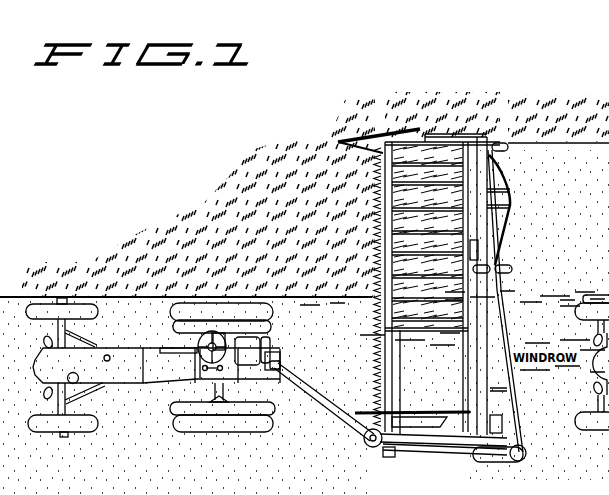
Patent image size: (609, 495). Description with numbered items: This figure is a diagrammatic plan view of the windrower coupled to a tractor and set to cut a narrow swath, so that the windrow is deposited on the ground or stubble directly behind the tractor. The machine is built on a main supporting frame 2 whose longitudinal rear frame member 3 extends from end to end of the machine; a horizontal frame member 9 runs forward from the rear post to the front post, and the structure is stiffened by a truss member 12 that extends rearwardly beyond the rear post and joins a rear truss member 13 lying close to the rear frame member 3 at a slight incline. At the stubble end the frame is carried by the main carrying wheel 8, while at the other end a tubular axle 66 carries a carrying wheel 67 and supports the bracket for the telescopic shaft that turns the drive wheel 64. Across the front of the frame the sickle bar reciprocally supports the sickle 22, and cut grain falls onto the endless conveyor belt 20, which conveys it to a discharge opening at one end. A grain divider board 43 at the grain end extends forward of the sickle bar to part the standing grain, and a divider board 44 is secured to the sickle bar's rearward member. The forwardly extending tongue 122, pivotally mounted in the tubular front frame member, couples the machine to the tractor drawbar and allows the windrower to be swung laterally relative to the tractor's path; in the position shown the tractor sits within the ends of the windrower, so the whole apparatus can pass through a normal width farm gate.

The main supporting frame 2 is at (517, 421).
The longitudinal rear frame member 3 is at (487, 228).
The main carrying wheel 8 is at (495, 457).
The horizontal frame member 9 is at (425, 438).
The truss member 12 is at (445, 455).
The rear truss member 13 is at (500, 297).
The endless conveyor belt 20 is at (457, 181).
The sickle 22 is at (377, 174).
The grain divider board 43 is at (341, 140).
The divider board 44 is at (415, 412).
The drive wheel 64 is at (500, 143).
The tubular axle 66 is at (488, 192).
The carrying wheel 67 is at (512, 268).
The tongue 122 is at (333, 410).